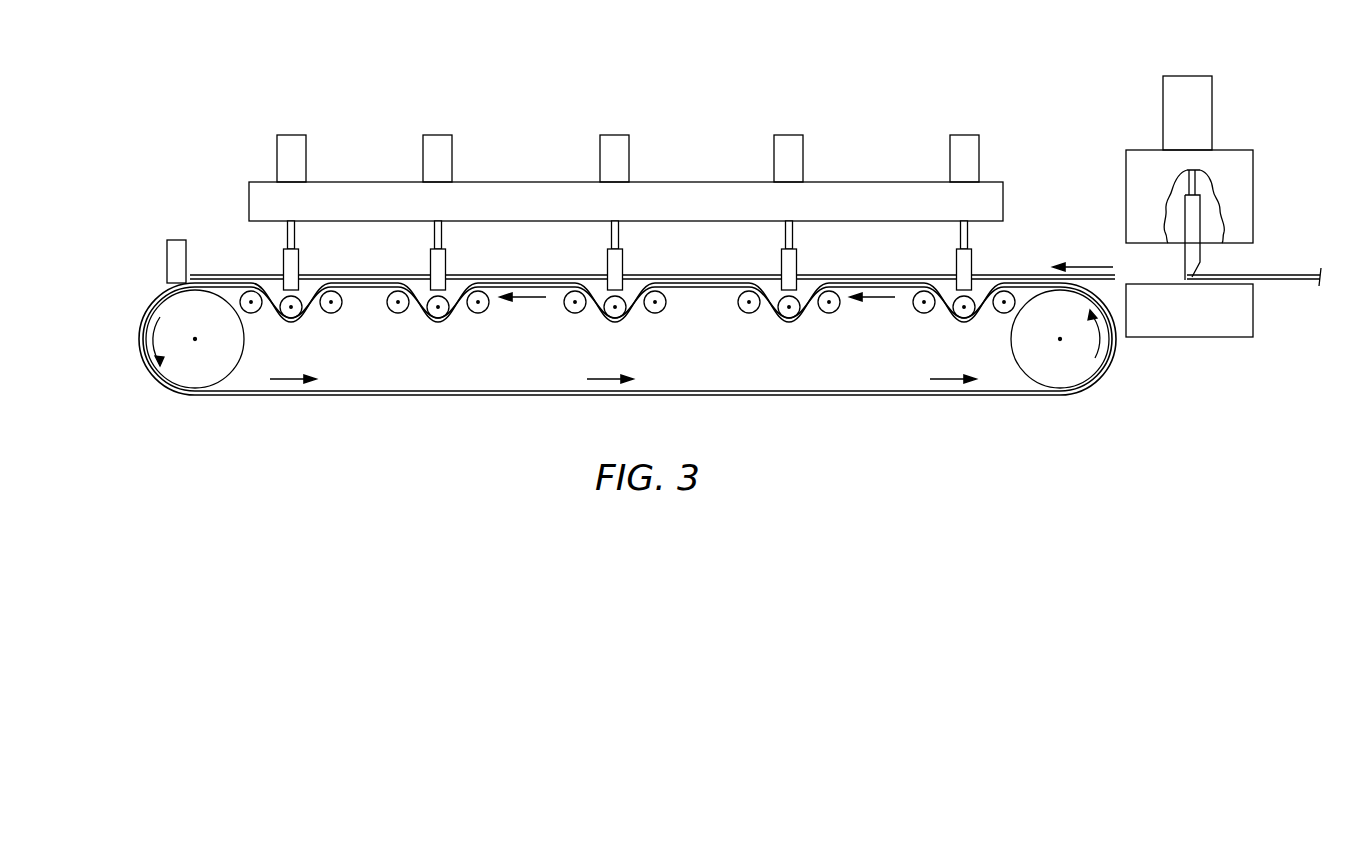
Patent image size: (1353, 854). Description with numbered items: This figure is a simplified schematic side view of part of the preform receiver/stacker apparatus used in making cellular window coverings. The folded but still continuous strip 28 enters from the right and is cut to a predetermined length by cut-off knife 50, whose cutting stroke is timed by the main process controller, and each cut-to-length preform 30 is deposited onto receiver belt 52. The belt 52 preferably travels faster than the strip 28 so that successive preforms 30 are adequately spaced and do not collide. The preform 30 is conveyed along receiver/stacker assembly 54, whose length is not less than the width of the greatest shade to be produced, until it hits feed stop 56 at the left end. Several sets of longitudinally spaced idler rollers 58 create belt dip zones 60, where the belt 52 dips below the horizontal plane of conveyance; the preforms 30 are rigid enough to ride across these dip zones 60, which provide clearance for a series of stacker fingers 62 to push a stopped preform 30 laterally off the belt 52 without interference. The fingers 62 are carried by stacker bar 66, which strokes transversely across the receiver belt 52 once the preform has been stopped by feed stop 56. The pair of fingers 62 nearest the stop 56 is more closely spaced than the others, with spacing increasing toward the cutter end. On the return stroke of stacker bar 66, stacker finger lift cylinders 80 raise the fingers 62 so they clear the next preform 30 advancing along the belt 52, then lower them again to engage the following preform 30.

The folded continuous strip 28 is at (1283, 272).
The preform 30 is at (320, 269).
The cut-off knife 50 is at (1232, 177).
The receiver belt 52 is at (1023, 282).
The receiver/stacker assembly 54 is at (607, 176).
The feed stop 56 is at (167, 261).
The idler rollers 58 is at (305, 334).
The belt dip zones 60 is at (453, 290).
The stacker fingers 62 is at (283, 263).
The stacker bar 66 is at (868, 189).
The stacker finger lift cylinders 80 is at (278, 147).